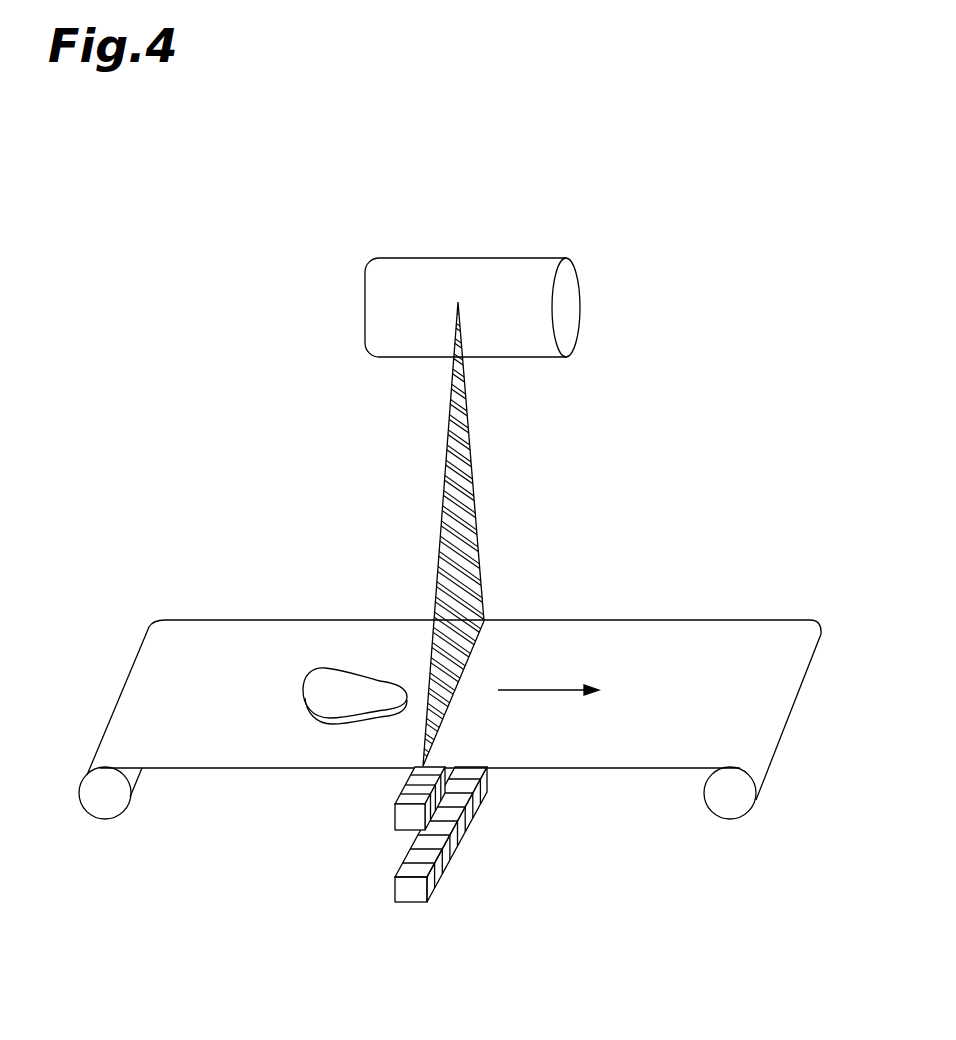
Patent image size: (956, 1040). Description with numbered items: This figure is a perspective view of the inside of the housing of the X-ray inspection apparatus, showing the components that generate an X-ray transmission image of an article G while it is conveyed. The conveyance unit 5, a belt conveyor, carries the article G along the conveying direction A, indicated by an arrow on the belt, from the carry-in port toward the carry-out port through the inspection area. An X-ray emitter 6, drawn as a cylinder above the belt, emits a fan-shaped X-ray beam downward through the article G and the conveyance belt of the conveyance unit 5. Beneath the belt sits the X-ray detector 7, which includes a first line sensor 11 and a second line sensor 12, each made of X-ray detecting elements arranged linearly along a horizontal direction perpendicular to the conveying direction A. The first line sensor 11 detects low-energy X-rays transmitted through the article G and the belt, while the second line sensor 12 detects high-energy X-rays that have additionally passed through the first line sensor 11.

The conveyance unit 5 is at (213, 637).
The X-ray emitter 6 is at (520, 270).
The X-ray detector 7 is at (415, 914).
The first line sensor 11 is at (405, 780).
The second line sensor 12 is at (453, 836).
The article G is at (364, 682).
The conveying direction A is at (548, 690).